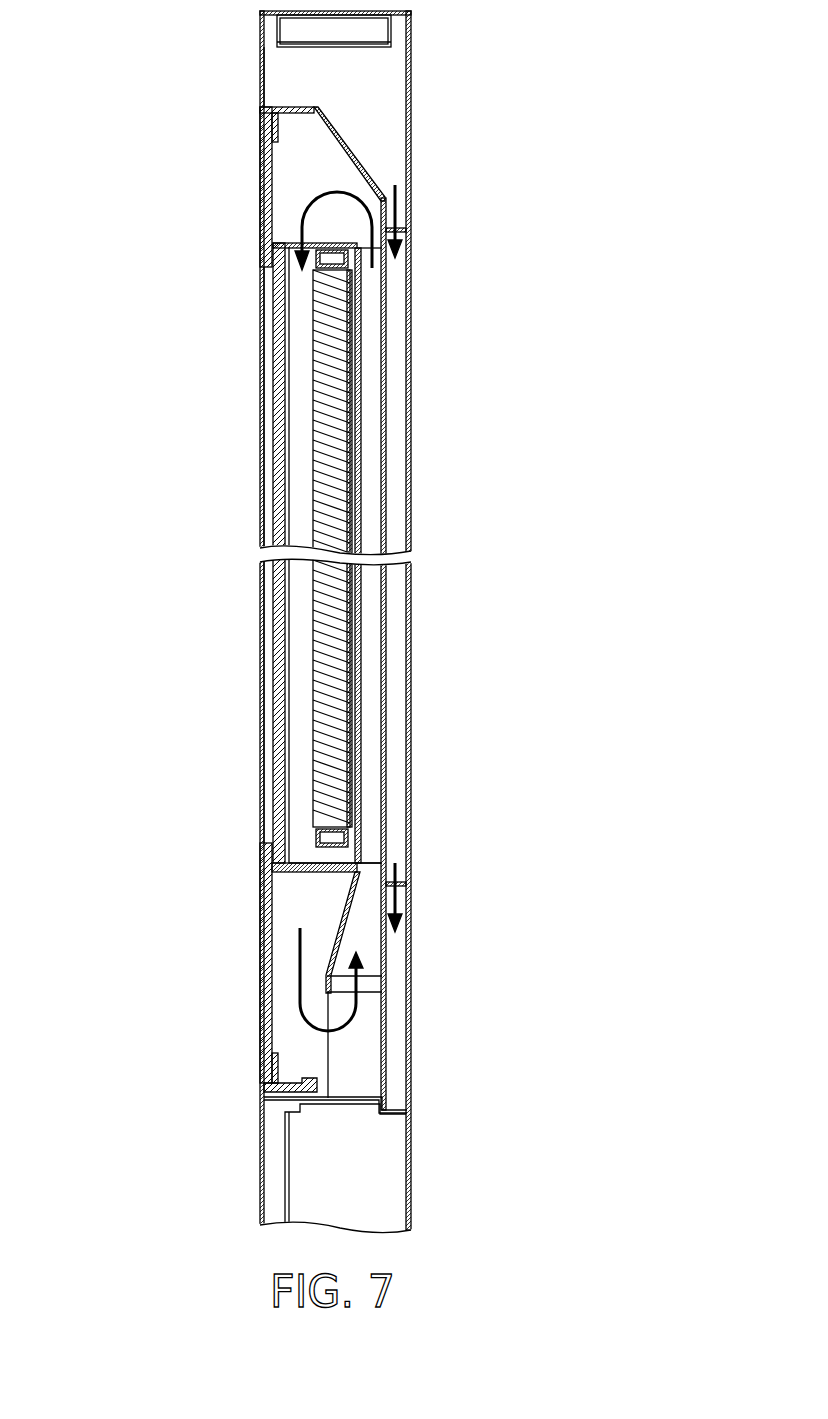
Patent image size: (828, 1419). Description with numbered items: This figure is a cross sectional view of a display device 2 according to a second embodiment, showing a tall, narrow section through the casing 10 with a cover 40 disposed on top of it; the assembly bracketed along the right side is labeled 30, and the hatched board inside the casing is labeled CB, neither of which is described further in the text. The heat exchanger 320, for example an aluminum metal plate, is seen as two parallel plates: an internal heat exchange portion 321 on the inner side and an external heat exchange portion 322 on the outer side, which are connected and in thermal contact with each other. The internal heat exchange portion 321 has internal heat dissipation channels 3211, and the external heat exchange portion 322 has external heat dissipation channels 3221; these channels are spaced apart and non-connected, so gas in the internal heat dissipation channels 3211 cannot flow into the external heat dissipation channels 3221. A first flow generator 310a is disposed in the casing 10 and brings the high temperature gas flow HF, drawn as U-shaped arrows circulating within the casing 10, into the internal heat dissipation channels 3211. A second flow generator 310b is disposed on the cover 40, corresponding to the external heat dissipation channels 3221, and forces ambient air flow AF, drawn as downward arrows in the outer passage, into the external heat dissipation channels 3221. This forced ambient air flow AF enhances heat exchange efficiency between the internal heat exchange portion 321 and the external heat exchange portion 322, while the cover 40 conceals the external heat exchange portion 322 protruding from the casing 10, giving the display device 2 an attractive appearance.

The display device 2 is at (137, 17).
The casing 10 is at (248, 128).
The heat dissipation module 30 is at (569, 117).
The cover 40 is at (424, 48).
The first flow generator 310a is at (360, 1033).
The second flow generator 310b is at (353, 31).
The heat exchanger 320 is at (502, 405).
The internal heat exchange portion 321 is at (360, 512).
The external heat exchange portion 322 is at (386, 418).
The internal heat dissipation channel 3211 is at (372, 322).
The external heat dissipation channel 3221 is at (395, 353).
The circuit board CB is at (292, 497).
The high temperature gas flow HF is at (303, 212).
The ambient air flow AF is at (400, 190).